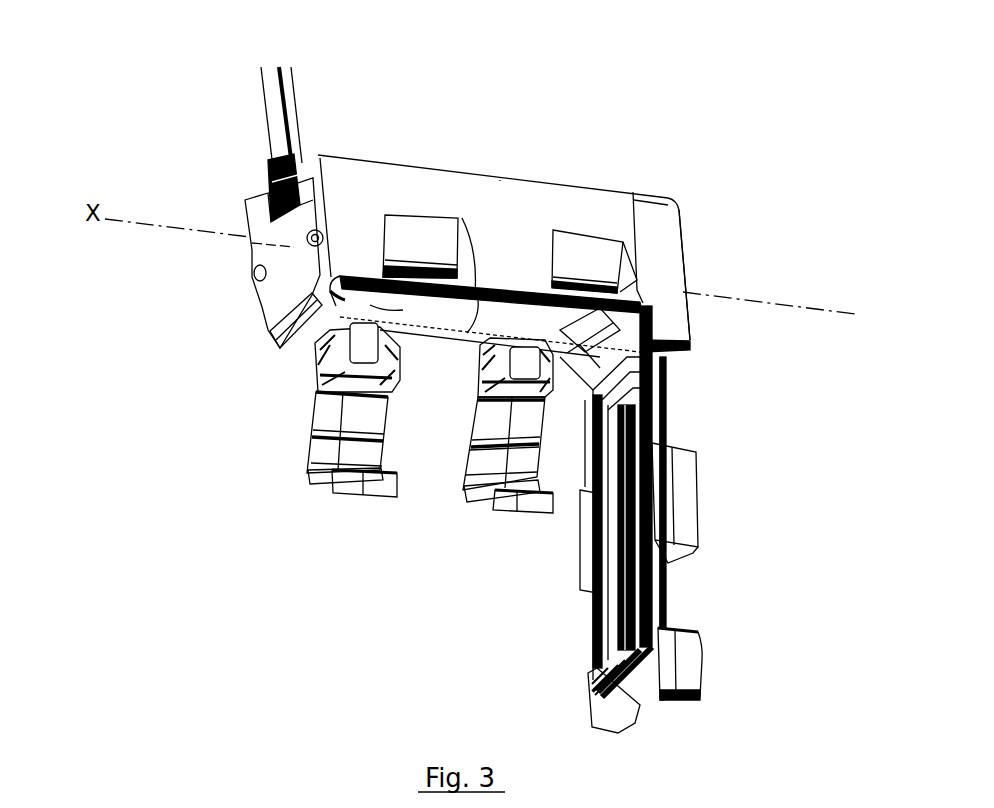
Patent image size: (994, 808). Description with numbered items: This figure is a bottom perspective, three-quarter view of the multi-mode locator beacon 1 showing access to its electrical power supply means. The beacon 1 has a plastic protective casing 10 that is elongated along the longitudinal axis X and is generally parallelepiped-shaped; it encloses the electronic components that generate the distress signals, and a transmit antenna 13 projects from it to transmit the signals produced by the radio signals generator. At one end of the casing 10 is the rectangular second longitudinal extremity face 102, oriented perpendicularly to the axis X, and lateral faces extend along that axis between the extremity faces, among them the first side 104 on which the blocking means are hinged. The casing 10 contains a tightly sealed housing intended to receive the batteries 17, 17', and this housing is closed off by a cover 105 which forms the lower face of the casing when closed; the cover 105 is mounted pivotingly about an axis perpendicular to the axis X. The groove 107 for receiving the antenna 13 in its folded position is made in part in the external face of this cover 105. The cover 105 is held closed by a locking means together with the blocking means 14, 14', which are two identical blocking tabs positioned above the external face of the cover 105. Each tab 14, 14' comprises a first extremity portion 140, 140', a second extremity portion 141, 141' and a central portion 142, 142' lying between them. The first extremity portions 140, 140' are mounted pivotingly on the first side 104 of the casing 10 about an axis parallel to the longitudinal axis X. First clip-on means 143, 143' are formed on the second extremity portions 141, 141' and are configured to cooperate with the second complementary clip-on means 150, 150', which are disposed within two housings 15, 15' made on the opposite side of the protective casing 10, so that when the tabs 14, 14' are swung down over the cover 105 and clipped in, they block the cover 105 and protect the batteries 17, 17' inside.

The multi-mode locator beacon 1 is at (506, 120).
The protective casing 10 is at (699, 343).
The transmit antenna 13 is at (272, 102).
The blocking tab 14 is at (304, 432).
The blocking tab 14' is at (474, 443).
The housing 15 is at (445, 212).
The housing 15' is at (634, 211).
The battery 17 is at (255, 287).
The battery 17' is at (668, 359).
The second longitudinal extremity face 102 is at (683, 252).
The first side 104 is at (657, 220).
The cover 105 is at (700, 505).
The groove 107 is at (652, 703).
The first extremity portion 140 is at (303, 357).
The first extremity portion 140' is at (478, 367).
The second extremity portion 141 is at (314, 501).
The second extremity portion 141' is at (473, 513).
The central portion 142 is at (305, 428).
The central portion 142' is at (469, 442).
The first clip-on means 143 is at (364, 519).
The first clip-on means 143' is at (523, 539).
The second complementary clip-on means 150 is at (395, 180).
The second complementary clip-on means 150' is at (583, 203).